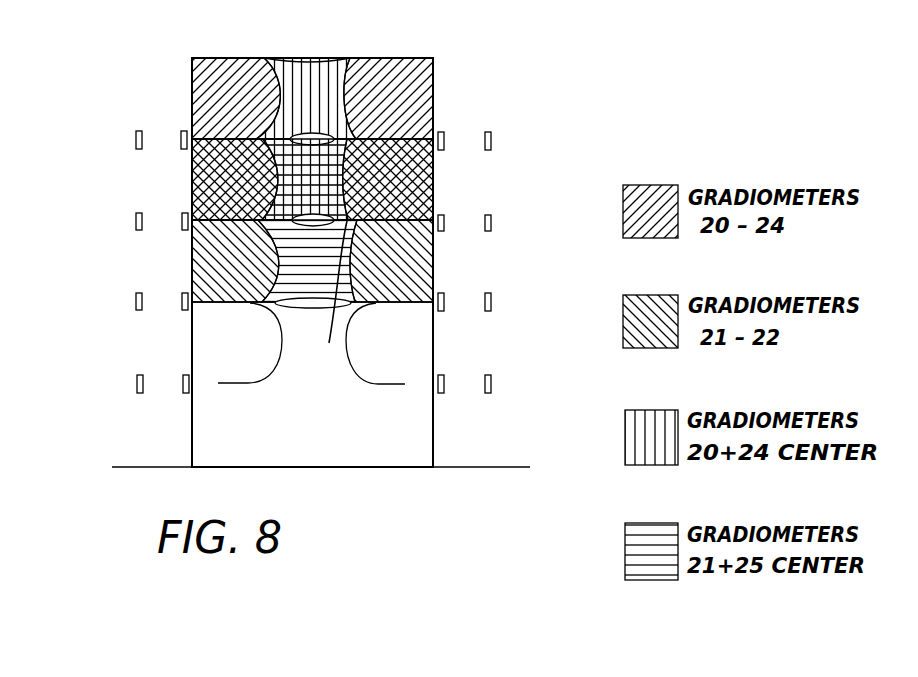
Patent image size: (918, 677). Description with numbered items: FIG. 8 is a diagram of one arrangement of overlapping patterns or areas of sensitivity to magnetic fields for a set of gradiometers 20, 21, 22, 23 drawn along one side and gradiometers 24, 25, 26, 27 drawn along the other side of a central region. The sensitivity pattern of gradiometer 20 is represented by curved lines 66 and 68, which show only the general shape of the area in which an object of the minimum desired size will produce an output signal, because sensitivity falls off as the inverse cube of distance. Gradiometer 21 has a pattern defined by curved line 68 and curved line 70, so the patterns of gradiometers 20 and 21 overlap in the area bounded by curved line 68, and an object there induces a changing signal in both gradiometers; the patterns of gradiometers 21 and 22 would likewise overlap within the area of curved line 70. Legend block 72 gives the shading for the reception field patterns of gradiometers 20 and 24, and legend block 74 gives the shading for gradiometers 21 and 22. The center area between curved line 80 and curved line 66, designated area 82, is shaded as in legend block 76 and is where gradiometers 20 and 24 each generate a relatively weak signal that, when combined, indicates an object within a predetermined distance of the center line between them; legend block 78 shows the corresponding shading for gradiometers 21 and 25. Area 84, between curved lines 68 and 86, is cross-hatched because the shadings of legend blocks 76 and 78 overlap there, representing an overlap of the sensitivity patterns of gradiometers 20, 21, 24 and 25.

The gradiometer 20 is at (171, 107).
The gradiometer 21 is at (160, 227).
The gradiometer 22 is at (160, 308).
The gradiometer 23 is at (160, 383).
The gradiometer 24 is at (465, 138).
The gradiometer 25 is at (466, 216).
The gradiometer 26 is at (472, 300).
The gradiometer 27 is at (468, 380).
The curved line 66 is at (258, 63).
The curved line 68 is at (262, 203).
The curved line 70 is at (275, 301).
The legend block 72 is at (657, 183).
The legend block 74 is at (658, 294).
The legend block 76 is at (662, 410).
The legend block 78 is at (660, 523).
The curved line 80 is at (372, 58).
The area 82 is at (323, 67).
The area 84 is at (323, 298).
The curved line 86 is at (368, 205).